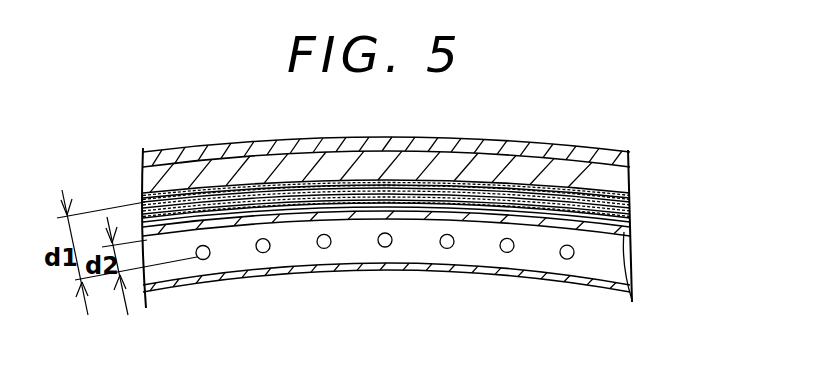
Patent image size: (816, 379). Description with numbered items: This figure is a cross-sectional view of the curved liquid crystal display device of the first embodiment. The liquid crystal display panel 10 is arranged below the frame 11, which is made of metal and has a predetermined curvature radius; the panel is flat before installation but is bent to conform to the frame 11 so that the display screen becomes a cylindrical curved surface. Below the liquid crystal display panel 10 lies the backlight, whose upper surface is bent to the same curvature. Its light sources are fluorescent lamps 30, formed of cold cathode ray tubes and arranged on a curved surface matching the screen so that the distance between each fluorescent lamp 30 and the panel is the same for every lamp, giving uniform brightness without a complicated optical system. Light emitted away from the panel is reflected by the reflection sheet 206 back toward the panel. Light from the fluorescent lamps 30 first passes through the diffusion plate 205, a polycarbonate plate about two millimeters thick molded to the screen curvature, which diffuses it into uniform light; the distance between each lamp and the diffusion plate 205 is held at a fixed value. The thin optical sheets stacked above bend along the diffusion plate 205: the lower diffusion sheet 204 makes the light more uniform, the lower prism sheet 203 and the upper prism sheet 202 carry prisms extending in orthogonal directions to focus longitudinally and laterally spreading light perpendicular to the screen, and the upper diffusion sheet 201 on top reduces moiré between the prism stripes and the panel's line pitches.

The frame 11 is at (605, 148).
The liquid crystal display panel 10 is at (632, 172).
The upper diffusion sheet 201 is at (633, 205).
The upper prism sheet 202 is at (630, 213).
The lower prism sheet 203 is at (628, 220).
The lower diffusion sheet 204 is at (631, 228).
The diffusion plate 205 is at (632, 238).
The reflection sheet 206 is at (596, 286).
The fluorescent lamp 30 is at (324, 249).